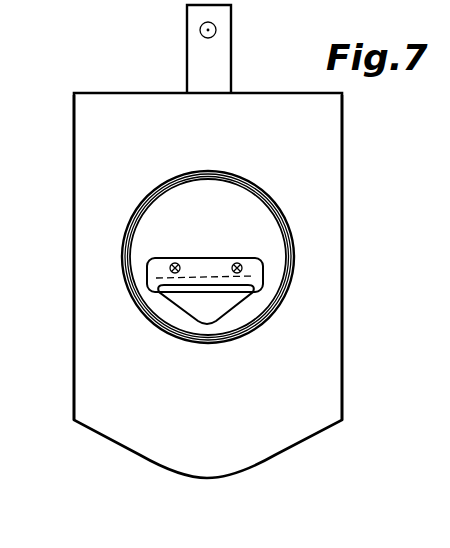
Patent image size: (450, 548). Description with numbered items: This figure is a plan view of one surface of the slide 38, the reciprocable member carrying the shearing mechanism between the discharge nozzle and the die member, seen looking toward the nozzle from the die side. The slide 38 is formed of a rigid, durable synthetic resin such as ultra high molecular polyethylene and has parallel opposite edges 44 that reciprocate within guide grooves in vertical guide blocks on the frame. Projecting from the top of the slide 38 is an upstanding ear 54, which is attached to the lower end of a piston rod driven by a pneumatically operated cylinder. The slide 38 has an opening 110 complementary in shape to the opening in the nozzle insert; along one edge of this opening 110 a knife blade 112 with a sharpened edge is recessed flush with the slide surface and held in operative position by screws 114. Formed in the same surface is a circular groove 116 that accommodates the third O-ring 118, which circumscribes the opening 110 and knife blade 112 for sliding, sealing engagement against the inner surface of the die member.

The slide 38 is at (342, 185).
The parallel opposite edges 44 is at (74, 262).
The upstanding ear 54 is at (225, 35).
The opening 110 is at (188, 306).
The knife blade 112 is at (210, 233).
The screws 114 is at (175, 263).
The circular groove 116 is at (257, 183).
The third O-ring 118 is at (177, 183).